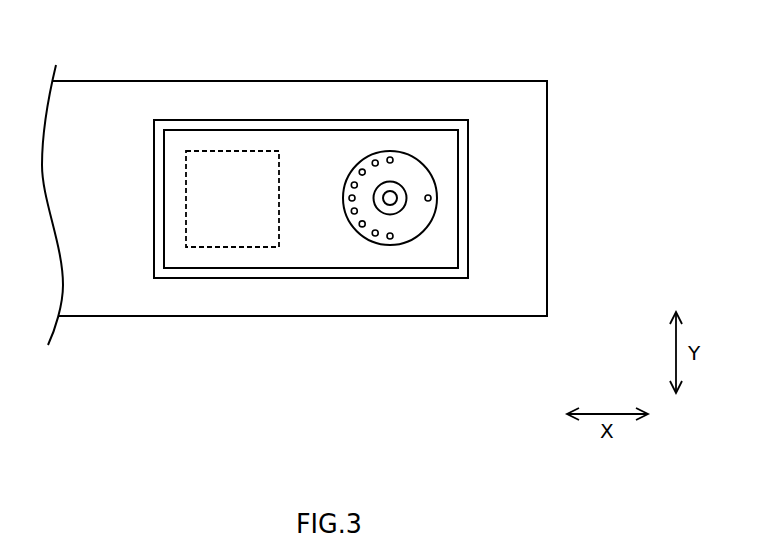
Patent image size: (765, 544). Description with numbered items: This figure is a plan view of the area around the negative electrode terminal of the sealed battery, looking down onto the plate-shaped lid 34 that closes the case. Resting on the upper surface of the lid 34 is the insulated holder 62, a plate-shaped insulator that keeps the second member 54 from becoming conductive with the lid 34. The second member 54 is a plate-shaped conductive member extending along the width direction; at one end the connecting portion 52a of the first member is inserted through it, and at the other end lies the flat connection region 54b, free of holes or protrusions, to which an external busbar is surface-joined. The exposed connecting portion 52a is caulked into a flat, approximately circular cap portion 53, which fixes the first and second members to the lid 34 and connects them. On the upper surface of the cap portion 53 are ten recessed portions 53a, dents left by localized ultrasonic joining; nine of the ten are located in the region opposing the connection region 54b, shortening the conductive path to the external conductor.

The lid 34 is at (512, 87).
The insulated holder 62 is at (470, 198).
The second member 54 is at (316, 256).
The connection region 54b is at (227, 166).
The cap portion 53 is at (420, 158).
The recessed portions 53a is at (388, 158).
The connecting portion 52a is at (403, 207).